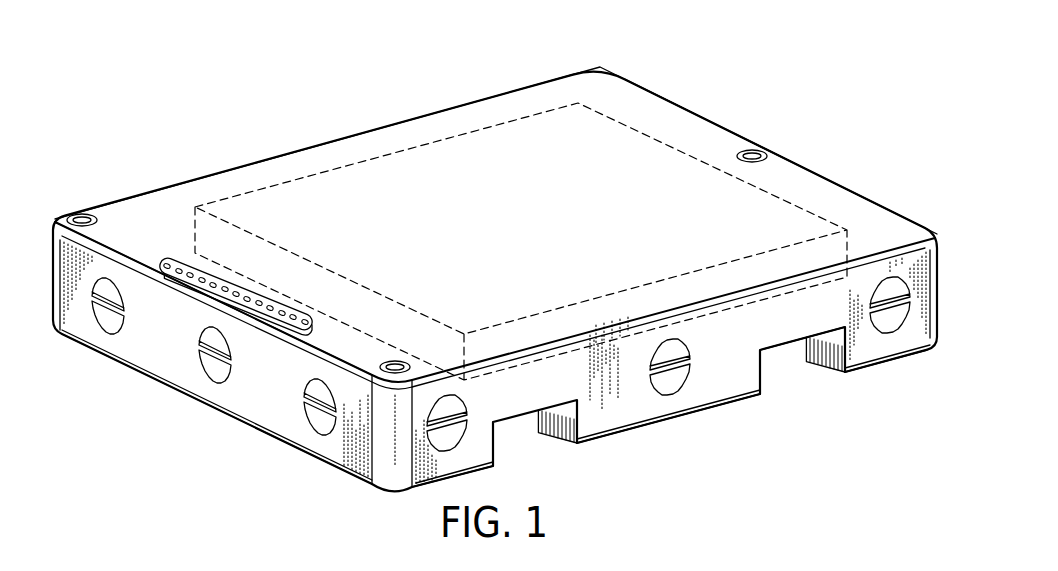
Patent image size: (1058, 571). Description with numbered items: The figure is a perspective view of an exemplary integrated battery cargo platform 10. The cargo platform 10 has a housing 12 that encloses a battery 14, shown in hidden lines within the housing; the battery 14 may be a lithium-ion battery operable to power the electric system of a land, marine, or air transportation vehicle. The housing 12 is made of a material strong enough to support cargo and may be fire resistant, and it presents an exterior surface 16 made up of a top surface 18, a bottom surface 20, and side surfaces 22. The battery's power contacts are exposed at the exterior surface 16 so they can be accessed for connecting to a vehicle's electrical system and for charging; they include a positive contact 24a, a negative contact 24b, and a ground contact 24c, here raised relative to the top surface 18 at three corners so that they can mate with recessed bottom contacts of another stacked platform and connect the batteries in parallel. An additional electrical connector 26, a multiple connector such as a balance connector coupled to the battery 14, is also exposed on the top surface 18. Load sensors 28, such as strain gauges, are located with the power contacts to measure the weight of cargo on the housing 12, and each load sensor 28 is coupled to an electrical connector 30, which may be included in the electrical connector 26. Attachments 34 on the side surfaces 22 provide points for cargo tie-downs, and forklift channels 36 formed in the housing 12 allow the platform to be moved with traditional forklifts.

The cargo platform 10 is at (247, 60).
The housing 12 is at (102, 365).
The battery 14 is at (462, 132).
The exterior surface 16 is at (838, 212).
The top surface 18 is at (648, 113).
The bottom surface 20 is at (683, 418).
The side surfaces 22 is at (238, 408).
The positive contact 24a is at (395, 361).
The negative contact 24b is at (80, 214).
The ground contact 24c is at (752, 151).
The electrical connector 26 is at (240, 285).
The load sensor 28 is at (98, 220).
The electrical connector 30 is at (312, 322).
The attachments 34 is at (890, 306).
The forklift channels 36 is at (797, 375).